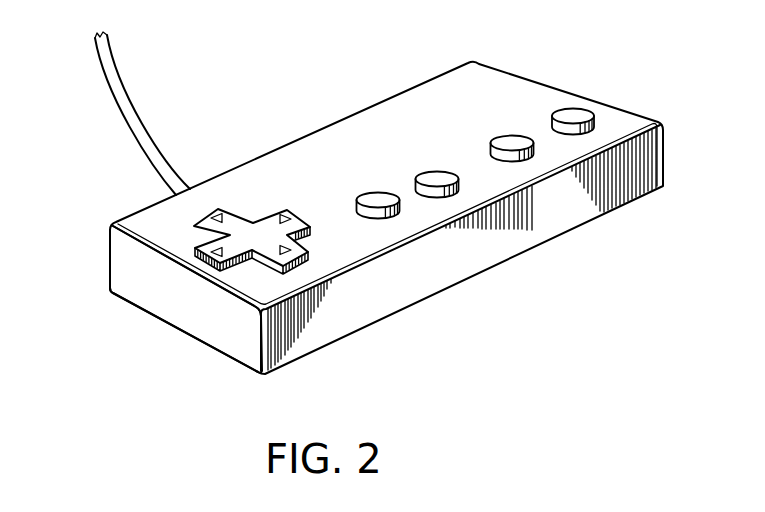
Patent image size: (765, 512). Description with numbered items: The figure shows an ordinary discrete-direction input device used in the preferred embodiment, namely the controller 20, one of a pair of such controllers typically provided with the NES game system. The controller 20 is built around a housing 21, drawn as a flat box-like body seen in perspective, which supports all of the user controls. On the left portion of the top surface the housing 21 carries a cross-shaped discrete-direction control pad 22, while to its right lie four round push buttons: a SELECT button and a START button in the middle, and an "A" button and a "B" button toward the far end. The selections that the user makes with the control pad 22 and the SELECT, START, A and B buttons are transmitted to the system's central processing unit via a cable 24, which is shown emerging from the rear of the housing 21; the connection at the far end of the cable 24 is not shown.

The controller 20 is at (616, 250).
The housing 21 is at (182, 313).
The discrete-direction control pad 22 is at (256, 197).
The cable 24 is at (123, 135).
The SELECT button SELECT is at (364, 196).
The START button START is at (427, 173).
The A button A is at (513, 142).
The B button B is at (572, 122).